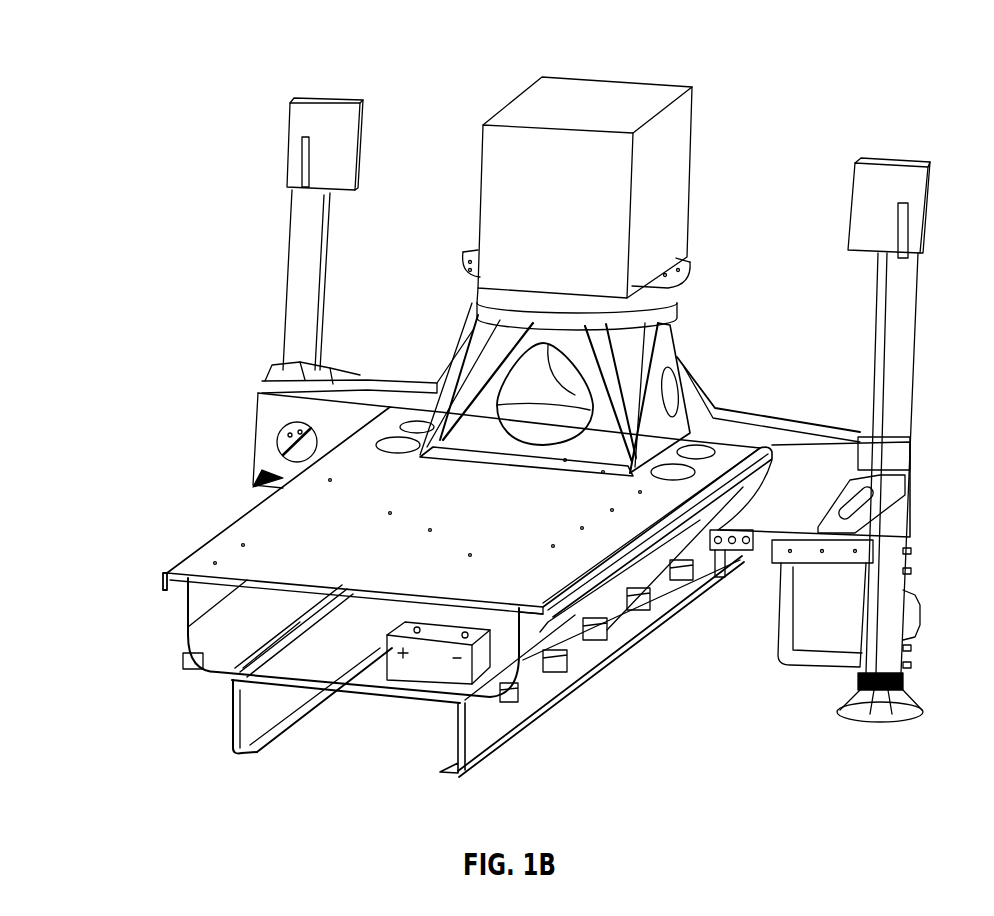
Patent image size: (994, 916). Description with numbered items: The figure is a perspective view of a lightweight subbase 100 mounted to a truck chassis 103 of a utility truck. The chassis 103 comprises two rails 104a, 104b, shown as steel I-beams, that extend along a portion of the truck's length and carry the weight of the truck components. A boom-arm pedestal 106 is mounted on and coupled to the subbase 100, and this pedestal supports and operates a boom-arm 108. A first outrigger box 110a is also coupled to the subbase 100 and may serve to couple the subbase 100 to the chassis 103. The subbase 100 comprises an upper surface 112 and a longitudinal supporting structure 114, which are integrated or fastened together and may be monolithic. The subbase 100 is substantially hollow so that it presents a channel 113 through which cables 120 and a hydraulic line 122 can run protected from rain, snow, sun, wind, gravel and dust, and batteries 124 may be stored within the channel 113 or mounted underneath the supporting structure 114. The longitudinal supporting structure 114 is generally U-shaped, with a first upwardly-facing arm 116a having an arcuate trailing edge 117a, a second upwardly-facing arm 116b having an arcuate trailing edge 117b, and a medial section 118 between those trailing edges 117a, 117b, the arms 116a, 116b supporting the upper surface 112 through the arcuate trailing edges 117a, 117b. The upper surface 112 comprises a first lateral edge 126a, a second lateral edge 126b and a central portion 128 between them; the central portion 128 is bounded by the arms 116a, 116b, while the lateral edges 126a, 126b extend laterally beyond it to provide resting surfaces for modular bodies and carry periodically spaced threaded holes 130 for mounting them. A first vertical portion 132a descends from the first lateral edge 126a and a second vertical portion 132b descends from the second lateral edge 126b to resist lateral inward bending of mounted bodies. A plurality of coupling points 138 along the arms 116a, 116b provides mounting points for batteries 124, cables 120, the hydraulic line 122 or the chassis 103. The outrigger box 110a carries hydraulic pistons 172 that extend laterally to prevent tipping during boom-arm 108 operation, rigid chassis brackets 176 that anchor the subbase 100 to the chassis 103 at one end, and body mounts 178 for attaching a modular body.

The lightweight subbase 100 is at (222, 511).
The truck chassis 103 is at (293, 745).
The chassis rail 104a is at (232, 703).
The chassis rail 104b is at (453, 777).
The boom-arm pedestal 106 is at (665, 303).
The boom-arm 108 is at (603, 105).
The first outrigger box 110a is at (803, 477).
The upper surface 112 is at (433, 531).
The channel 113 is at (270, 620).
The longitudinal supporting structure 114 is at (290, 686).
The first upwardly-facing arm 116a is at (170, 583).
The second upwardly-facing arm 116b is at (545, 632).
The arcuate trailing edge 117a is at (188, 638).
The arcuate trailing edge 117b is at (488, 704).
The medial section 118 is at (378, 685).
The cables 120 is at (277, 652).
The hydraulic line 122 is at (242, 670).
The batteries 124 is at (448, 668).
The first lateral edge 126a is at (177, 567).
The second lateral edge 126b is at (532, 608).
The central portion 128 is at (428, 500).
The threaded holes 130 is at (273, 518).
The first vertical portion 132a is at (167, 588).
The second vertical portion 132b is at (595, 600).
The coupling points 138 is at (183, 667).
The hydraulic pistons 172 is at (300, 278).
The rigid chassis brackets 176 is at (722, 548).
The body mounts 178 is at (803, 553).